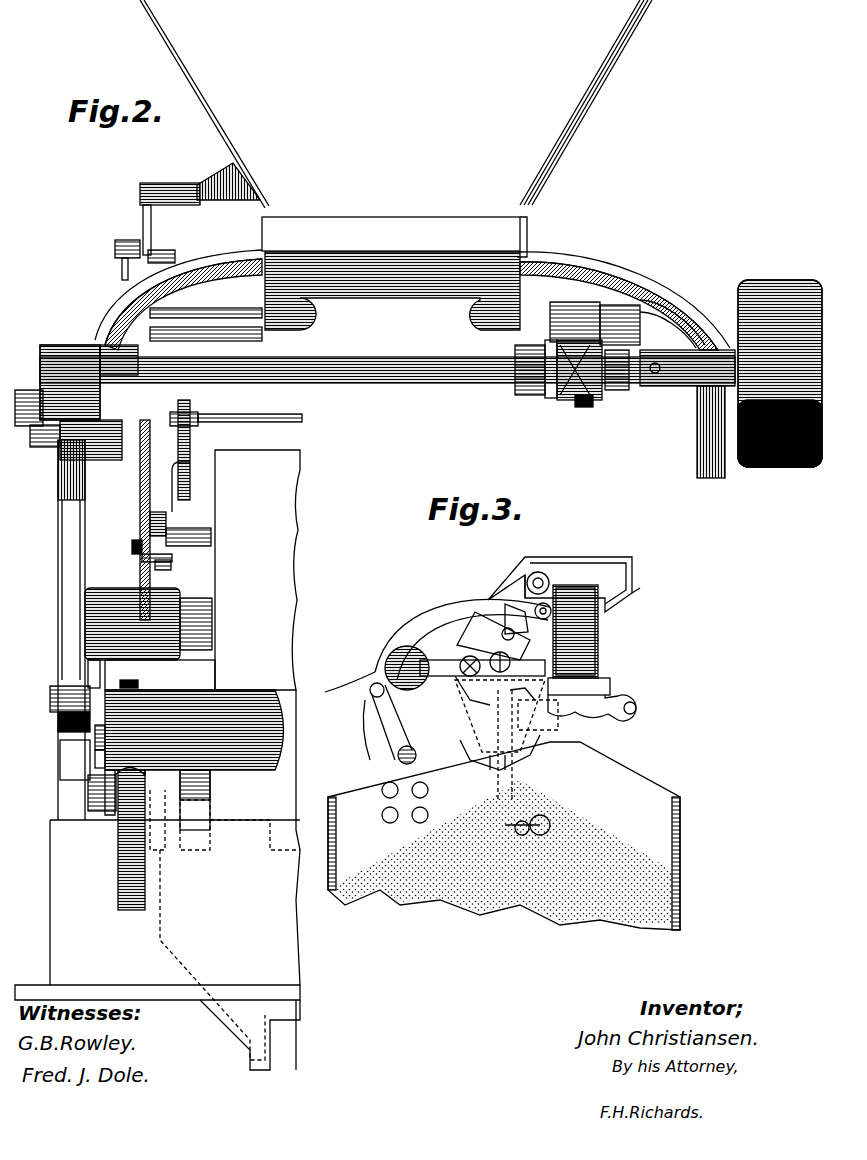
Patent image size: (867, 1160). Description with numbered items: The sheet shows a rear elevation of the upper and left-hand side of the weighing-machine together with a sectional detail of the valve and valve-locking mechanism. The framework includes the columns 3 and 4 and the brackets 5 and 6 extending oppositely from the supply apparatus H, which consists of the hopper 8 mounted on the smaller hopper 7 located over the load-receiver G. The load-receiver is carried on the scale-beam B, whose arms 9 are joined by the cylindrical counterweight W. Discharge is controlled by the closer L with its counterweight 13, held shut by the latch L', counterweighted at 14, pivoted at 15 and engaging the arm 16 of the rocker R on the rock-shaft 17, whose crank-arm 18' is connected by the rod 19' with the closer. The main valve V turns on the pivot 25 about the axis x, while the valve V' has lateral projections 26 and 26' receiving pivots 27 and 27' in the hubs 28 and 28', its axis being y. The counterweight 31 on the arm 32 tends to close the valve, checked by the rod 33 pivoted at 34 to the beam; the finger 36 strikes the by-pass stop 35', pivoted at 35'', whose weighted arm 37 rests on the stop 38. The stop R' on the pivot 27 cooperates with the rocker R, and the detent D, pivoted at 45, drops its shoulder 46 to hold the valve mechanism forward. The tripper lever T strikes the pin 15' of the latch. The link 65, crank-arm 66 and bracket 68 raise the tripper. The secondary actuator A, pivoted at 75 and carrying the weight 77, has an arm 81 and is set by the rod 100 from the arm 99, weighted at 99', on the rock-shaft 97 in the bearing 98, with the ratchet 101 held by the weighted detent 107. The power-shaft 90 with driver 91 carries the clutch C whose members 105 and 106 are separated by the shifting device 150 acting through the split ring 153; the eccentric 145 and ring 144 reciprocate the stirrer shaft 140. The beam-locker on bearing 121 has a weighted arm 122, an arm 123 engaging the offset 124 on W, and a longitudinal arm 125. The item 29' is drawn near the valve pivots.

In FIG. 2, the column 3 is at (62, 565).
In FIG. 3, the column 3 is at (642, 709).
In FIG. 2, the column 4 is at (700, 451).
In FIG. 2, the bracket 5 is at (205, 262).
In FIG. 3, the bracket 5 is at (606, 603).
In FIG. 2, the bracket 6 is at (624, 274).
In FIG. 2, the hopper 7 is at (462, 229).
In FIG. 3, the hopper 7 is at (628, 566).
In FIG. 2, the hopper 8 is at (578, 96).
In FIG. 2, the arm 9 is at (125, 682).
In FIG. 2, the counterweight 13 is at (218, 790).
In FIG. 2, the counterweight 14 is at (150, 560).
In FIG. 2, the pivot 15 is at (120, 544).
In FIG. 2, the pin 15' is at (171, 574).
In FIG. 2, the arm 16 is at (173, 520).
In FIG. 2, the rock-shaft 17 is at (300, 422).
In FIG. 3, the rock-shaft 17 is at (398, 752).
In FIG. 3, the crank-arm 18' is at (370, 721).
In FIG. 3, the rod 19' is at (350, 733).
In FIG. 3, the pivot 25 is at (496, 655).
In FIG. 2, the lateral projection 26 is at (206, 341).
In FIG. 2, the lateral projection 26' is at (573, 313).
In FIG. 3, the pivot 27 is at (477, 641).
In FIG. 2, the pivot 27' is at (670, 316).
In FIG. 3, the bearing or hub 28 is at (570, 634).
In FIG. 2, the bearing or hub 28' is at (667, 306).
In FIG. 3, the pivot 29' is at (429, 634).
In FIG. 2, the counterweight 31 is at (172, 255).
In FIG. 3, the counterweight 31 is at (396, 655).
In FIG. 3, the arm 32 is at (455, 660).
In FIG. 3, the rod 33 is at (470, 707).
In FIG. 3, the pivot 34 is at (456, 678).
In FIG. 3, the by-pass stop 35' is at (539, 800).
In FIG. 3, the pivot 35'' is at (508, 855).
In FIG. 3, the rod or finger 36 is at (488, 760).
In FIG. 3, the weighted arm 37 is at (565, 826).
In FIG. 3, the stop 38 is at (536, 838).
In FIG. 3, the pivot 45 is at (570, 592).
In FIG. 3, the shoulder 46 is at (495, 598).
In FIG. 2, the link 65 is at (122, 268).
In FIG. 2, the crank-arm 66 is at (149, 223).
In FIG. 2, the bracket 68 is at (240, 182).
In FIG. 2, the pivot 75 is at (55, 690).
In FIG. 2, the weight 77 is at (100, 615).
In FIG. 2, the arm 81 is at (60, 716).
In FIG. 2, the power-shaft 90 is at (655, 355).
In FIG. 2, the driver 91 is at (780, 373).
In FIG. 2, the rock-shaft 97 is at (20, 394).
In FIG. 2, the bearing 98 is at (62, 385).
In FIG. 2, the arm 99 is at (135, 356).
In FIG. 2, the weight 99' is at (195, 323).
In FIG. 2, the rod 100 is at (140, 470).
In FIG. 2, the ratchet 101 is at (82, 446).
In FIG. 2, the clutch member 105 is at (583, 407).
In FIG. 2, the clutch member 106 is at (546, 400).
In FIG. 2, the weighted detent 107 is at (46, 455).
In FIG. 2, the bearing 121 is at (118, 868).
In FIG. 2, the weighted arm 122 is at (102, 815).
In FIG. 2, the arm 123 is at (95, 733).
In FIG. 2, the offset 124 is at (98, 758).
In FIG. 2, the longitudinal arm 125 is at (168, 856).
In FIG. 3, the shaft 140 is at (540, 572).
In FIG. 2, the ring 144 is at (532, 397).
In FIG. 2, the eccentric 145 is at (512, 386).
In FIG. 2, the shifting device 150 is at (612, 318).
In FIG. 2, the split ring 153 is at (600, 398).
In FIG. 2, the secondary actuator A is at (92, 668).
In FIG. 2, the scale-beam B is at (160, 675).
In FIG. 2, the clutch C is at (570, 398).
In FIG. 3, the detent D is at (502, 604).
In FIG. 2, the load-receiver G is at (257, 570).
In FIG. 3, the load-receiver G is at (504, 836).
In FIG. 2, the supply apparatus H is at (530, 231).
In FIG. 3, the supply apparatus H is at (646, 579).
In FIG. 2, the closer L is at (157, 880).
In FIG. 2, the latch L' is at (188, 529).
In FIG. 2, the rocker R is at (178, 450).
In FIG. 3, the stop R' is at (528, 745).
In FIG. 2, the lever T is at (148, 520).
In FIG. 2, the main valve V is at (391, 304).
In FIG. 3, the main valve V is at (437, 638).
In FIG. 2, the valve V' is at (387, 390).
In FIG. 3, the valve V' is at (495, 755).
In FIG. 2, the counterweight W is at (194, 730).
In FIG. 3, the axis x is at (508, 628).
In FIG. 3, the axis y is at (522, 690).